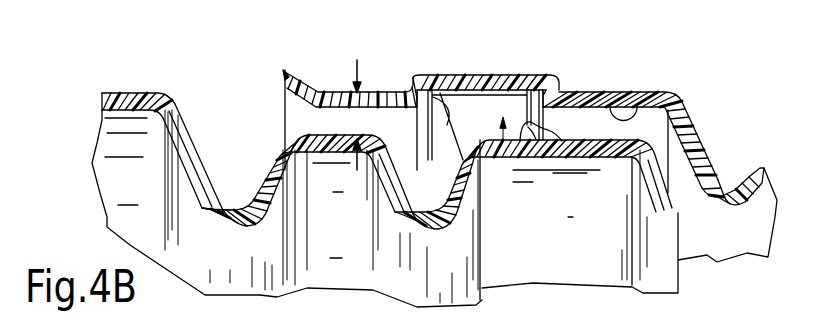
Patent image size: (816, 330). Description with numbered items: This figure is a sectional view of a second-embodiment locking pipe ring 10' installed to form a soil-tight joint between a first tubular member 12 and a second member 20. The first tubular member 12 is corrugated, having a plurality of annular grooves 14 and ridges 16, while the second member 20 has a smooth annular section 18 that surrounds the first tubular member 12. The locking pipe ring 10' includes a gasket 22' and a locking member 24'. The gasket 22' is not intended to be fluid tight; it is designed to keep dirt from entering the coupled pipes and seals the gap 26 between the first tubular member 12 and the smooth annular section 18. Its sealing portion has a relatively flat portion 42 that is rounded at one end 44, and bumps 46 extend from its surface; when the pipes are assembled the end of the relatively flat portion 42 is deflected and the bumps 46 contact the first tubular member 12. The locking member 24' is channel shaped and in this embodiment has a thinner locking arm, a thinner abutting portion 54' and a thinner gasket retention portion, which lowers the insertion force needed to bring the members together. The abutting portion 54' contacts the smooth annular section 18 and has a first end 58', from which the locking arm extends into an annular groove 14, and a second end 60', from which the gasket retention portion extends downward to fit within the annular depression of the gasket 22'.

The first tubular member 12 is at (147, 97).
The annular groove 14 is at (232, 210).
The ridge 16 is at (333, 140).
The gap 26 is at (371, 132).
The first end 58' is at (475, 105).
The locking member 24' is at (388, 94).
The abutting portion 54' is at (486, 64).
The second member 20 is at (500, 80).
The second end 60' is at (579, 71).
The gasket 22' is at (569, 101).
The smooth annular section 18 is at (650, 92).
The locking pipe ring 10' is at (536, 205).
The relatively flat portion 42 is at (527, 160).
The bumps 46 is at (547, 163).
The rounded end 44 is at (547, 170).